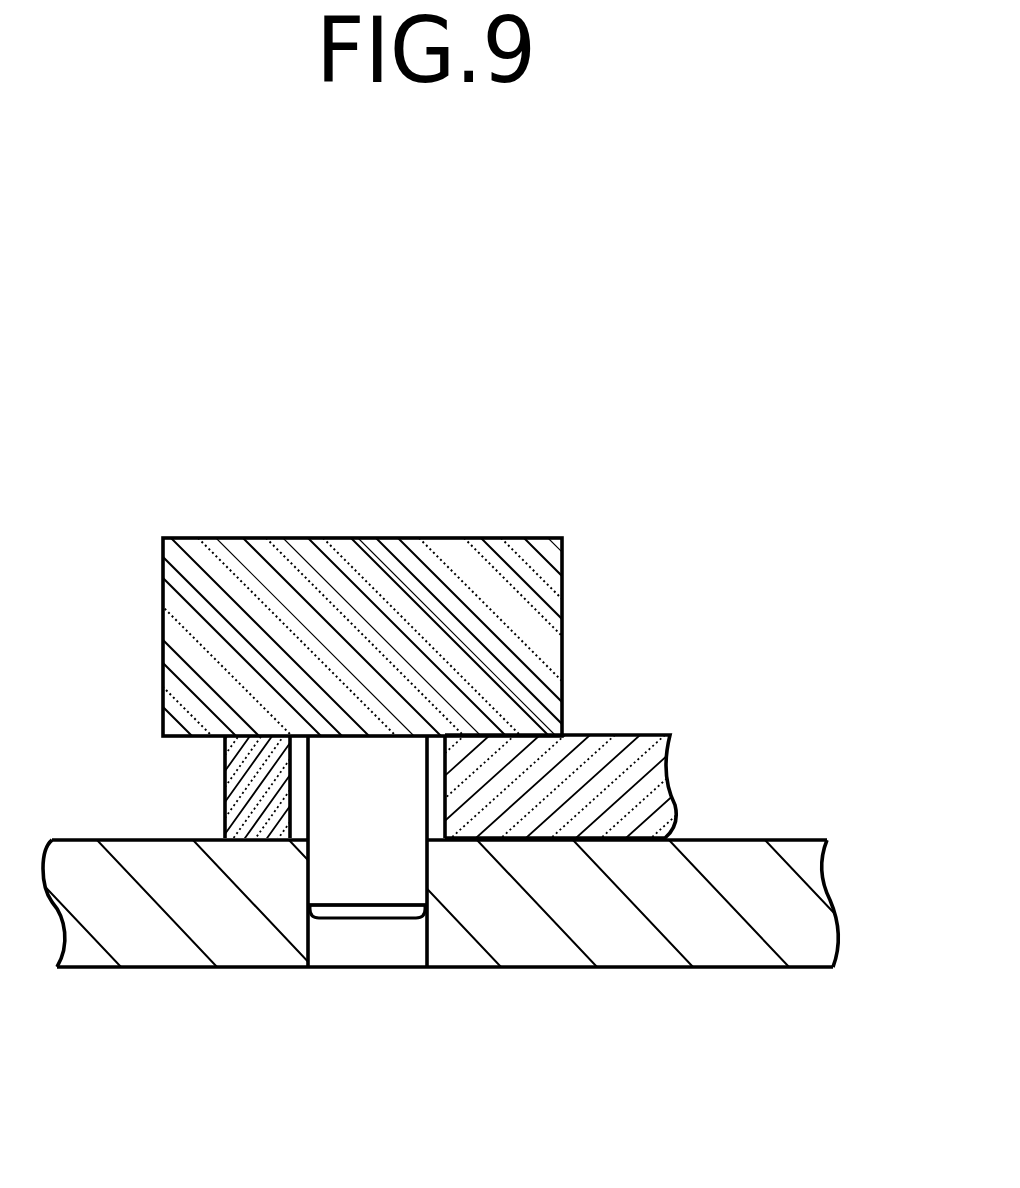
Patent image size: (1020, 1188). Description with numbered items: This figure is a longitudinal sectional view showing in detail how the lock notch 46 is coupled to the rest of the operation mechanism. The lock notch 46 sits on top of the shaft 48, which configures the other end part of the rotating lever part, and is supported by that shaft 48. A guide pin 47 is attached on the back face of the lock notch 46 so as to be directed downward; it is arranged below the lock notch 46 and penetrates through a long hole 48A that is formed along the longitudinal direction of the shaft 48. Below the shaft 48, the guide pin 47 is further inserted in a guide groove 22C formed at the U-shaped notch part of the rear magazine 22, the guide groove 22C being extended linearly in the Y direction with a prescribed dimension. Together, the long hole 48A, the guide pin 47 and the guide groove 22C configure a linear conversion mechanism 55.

The rear magazine 22 is at (715, 935).
The guide groove 22C is at (312, 937).
The lock notch 46 is at (224, 592).
The guide pin 47 is at (378, 773).
The shaft 48 is at (612, 778).
The long hole 48A is at (445, 790).
The linear conversion mechanism 55 is at (370, 933).